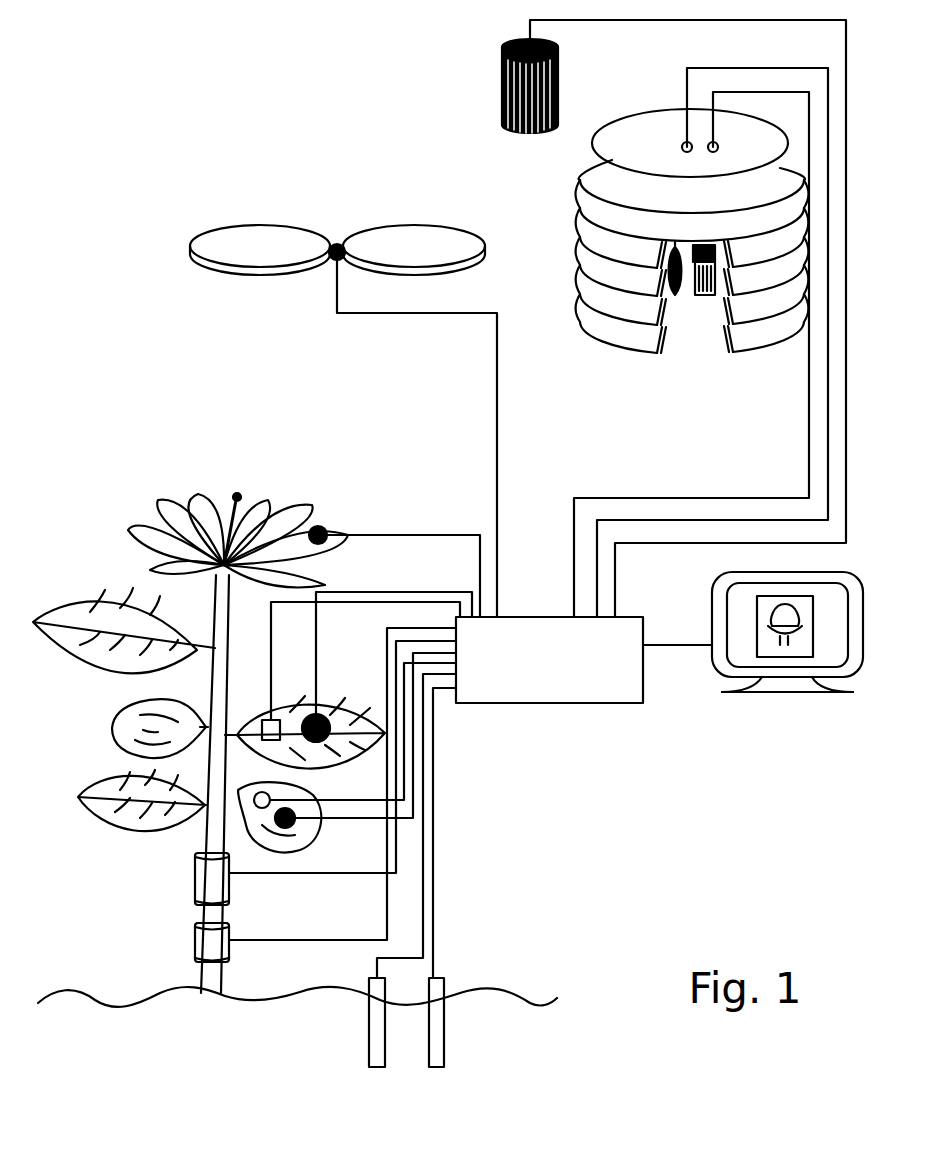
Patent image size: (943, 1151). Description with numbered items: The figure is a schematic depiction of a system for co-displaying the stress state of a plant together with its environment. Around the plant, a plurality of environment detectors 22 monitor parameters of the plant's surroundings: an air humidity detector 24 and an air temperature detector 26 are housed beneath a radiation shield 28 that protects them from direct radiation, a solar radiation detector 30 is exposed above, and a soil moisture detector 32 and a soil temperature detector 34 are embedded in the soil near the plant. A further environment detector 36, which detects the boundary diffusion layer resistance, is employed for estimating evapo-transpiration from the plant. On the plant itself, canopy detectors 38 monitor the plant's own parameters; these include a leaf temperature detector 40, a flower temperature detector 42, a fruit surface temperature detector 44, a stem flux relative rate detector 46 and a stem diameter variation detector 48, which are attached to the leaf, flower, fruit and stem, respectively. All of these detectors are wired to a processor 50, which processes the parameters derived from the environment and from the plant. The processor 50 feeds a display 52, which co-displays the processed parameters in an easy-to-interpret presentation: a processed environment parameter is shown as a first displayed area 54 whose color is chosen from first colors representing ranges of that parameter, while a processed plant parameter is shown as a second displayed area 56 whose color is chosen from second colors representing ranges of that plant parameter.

The environment detector 22 is at (518, 105).
The air humidity detector 24 is at (706, 297).
The air temperature detector 26 is at (676, 296).
The radiation shield 28 is at (612, 152).
The solar radiation detector 30 is at (502, 78).
The soil moisture detector 32 is at (377, 1068).
The soil temperature detector 34 is at (437, 1068).
The boundary diffusion layer resistance detector 36 is at (250, 228).
The canopy detector 38 is at (320, 527).
The leaf temperature detector 40 is at (318, 745).
The flower temperature detector 42 is at (325, 545).
The fruit surface temperature detector 44 is at (292, 826).
The stem flux relative rate detector 46 is at (195, 938).
The stem diameter variation detector 48 is at (195, 868).
The processor 50 is at (553, 703).
The display 52 is at (865, 607).
The first displayed area 54 is at (808, 640).
The second displayed area 56 is at (783, 645).